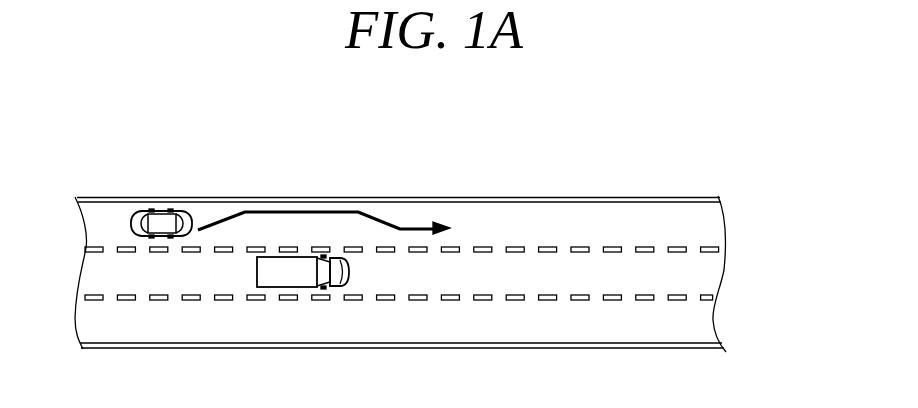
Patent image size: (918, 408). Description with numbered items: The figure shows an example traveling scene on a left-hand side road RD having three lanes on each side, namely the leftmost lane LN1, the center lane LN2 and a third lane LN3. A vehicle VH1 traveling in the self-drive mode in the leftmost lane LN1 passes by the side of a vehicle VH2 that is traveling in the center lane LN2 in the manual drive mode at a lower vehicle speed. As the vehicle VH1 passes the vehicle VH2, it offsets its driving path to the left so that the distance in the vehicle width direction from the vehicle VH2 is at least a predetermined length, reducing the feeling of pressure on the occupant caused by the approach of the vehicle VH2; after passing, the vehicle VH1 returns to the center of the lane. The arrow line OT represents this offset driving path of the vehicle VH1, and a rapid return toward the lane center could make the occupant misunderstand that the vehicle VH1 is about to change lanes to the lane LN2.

The road RD is at (635, 196).
The leftmost lane LN1 is at (703, 222).
The center lane LN2 is at (703, 276).
The lane LN3 is at (703, 330).
The vehicle VH1 is at (155, 211).
The vehicle VH2 is at (278, 287).
The offset driving path OT is at (310, 210).